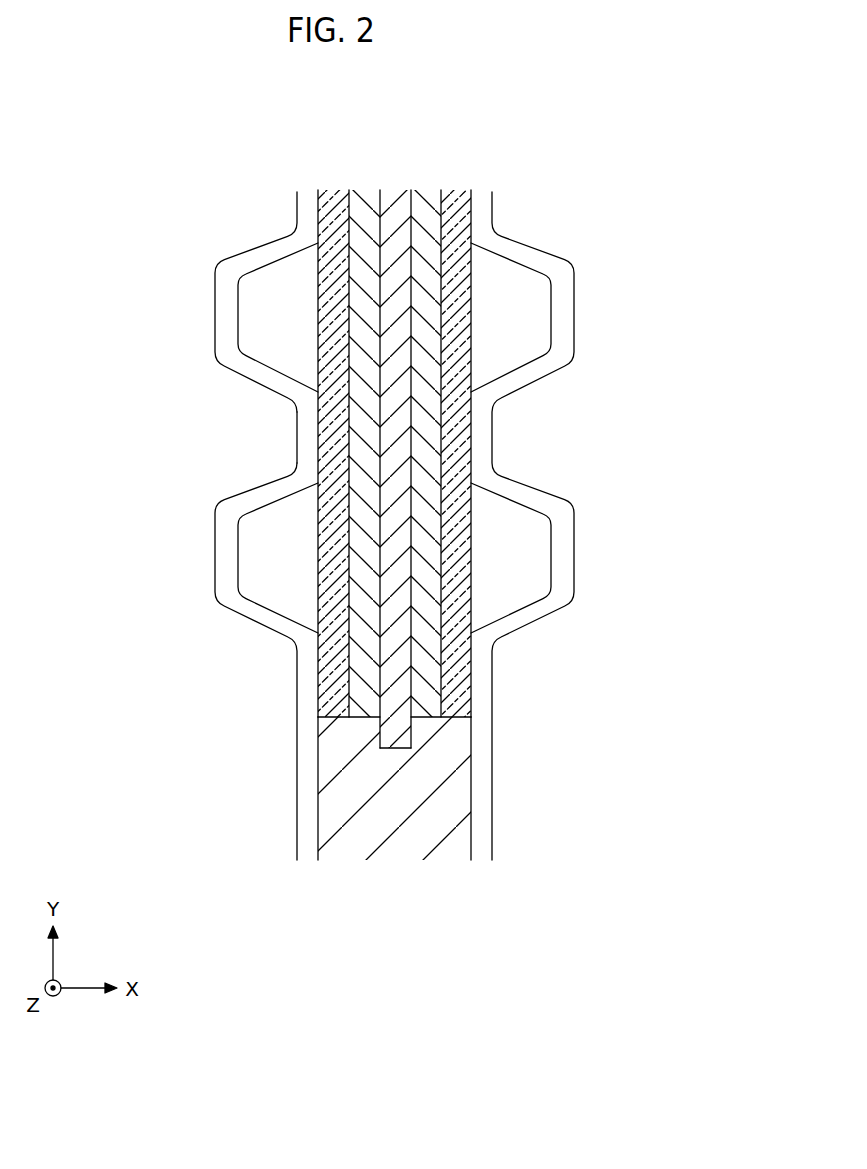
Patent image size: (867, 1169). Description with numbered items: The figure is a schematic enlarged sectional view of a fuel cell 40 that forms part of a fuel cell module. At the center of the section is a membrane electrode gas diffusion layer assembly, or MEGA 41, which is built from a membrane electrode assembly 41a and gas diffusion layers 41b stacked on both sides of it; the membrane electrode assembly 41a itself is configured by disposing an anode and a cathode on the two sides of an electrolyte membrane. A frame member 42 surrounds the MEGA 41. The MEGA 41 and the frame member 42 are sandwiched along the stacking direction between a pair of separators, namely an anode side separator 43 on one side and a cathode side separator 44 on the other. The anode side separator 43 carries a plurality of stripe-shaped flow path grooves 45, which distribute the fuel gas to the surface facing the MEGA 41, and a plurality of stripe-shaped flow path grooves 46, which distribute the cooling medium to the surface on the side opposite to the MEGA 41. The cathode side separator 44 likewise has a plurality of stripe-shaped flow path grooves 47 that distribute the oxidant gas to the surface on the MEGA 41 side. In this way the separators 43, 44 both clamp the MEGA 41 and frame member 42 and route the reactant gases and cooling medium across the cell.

The fuel cell 40 is at (616, 150).
The membrane electrode gas diffusion layer assembly (MEGA) 41 is at (510, 123).
The membrane electrode assembly 41a is at (348, 190).
The gas diffusion layers 41b is at (336, 200).
The frame member 42 is at (423, 781).
The anode side separator 43 is at (308, 842).
The cathode side separator 44 is at (478, 842).
The flow path grooves 45 is at (238, 320).
The flow path grooves 46 is at (297, 436).
The flow path grooves 47 is at (557, 333).